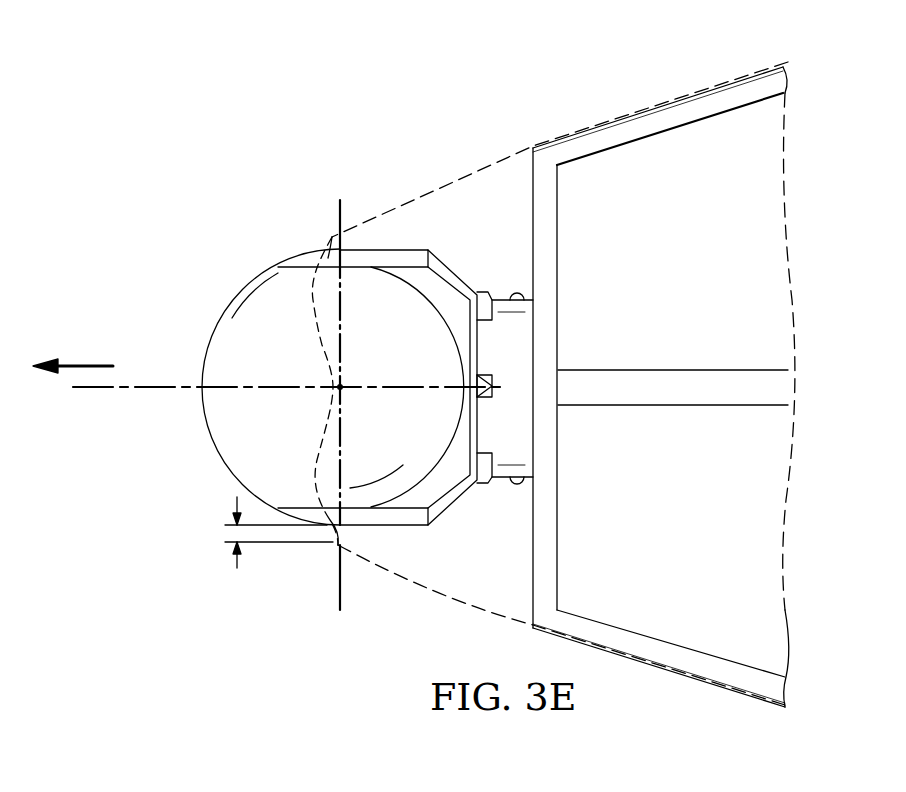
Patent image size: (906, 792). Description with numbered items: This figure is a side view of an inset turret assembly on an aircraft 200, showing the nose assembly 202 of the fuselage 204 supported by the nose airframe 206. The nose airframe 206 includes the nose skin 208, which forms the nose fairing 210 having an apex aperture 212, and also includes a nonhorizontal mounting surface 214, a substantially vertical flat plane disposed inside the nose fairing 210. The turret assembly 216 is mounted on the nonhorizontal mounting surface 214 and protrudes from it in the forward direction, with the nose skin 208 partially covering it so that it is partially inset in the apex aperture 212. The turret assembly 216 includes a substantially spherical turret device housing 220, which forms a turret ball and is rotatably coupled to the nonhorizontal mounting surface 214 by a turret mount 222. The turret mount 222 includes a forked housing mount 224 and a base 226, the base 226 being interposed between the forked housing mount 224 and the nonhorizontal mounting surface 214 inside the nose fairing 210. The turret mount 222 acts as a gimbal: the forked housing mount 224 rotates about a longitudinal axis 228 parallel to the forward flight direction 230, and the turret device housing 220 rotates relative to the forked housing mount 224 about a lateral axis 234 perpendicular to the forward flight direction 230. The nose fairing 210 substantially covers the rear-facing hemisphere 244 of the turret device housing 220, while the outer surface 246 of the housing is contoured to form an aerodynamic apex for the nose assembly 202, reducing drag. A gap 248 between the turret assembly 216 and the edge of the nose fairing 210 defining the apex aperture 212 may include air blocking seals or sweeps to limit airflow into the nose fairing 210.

The aircraft 200 is at (602, 374).
The nose assembly 202 is at (602, 374).
The fuselage 204 is at (688, 95).
The nose airframe 206 is at (683, 370).
The nose skin 208 is at (560, 383).
The nose fairing 210 is at (423, 186).
The apex aperture 212 is at (323, 338).
The nonhorizontal mounting surface 214 is at (533, 218).
The turret assembly 216 is at (378, 250).
The turret device housing 220 is at (316, 363).
The turret mount 222 is at (462, 518).
The forked housing mount 224 is at (300, 247).
The base 226 is at (512, 430).
The longitudinal axis 228 is at (93, 393).
The forward flight direction 230 is at (85, 363).
The lateral axis 234 is at (338, 583).
The rear-facing hemisphere 244 is at (425, 315).
The outer surface 246 is at (212, 363).
The gap 248 is at (237, 567).